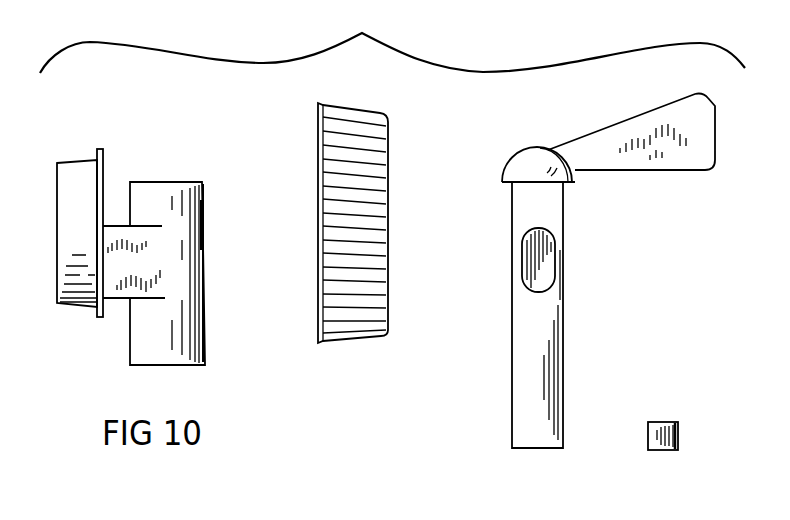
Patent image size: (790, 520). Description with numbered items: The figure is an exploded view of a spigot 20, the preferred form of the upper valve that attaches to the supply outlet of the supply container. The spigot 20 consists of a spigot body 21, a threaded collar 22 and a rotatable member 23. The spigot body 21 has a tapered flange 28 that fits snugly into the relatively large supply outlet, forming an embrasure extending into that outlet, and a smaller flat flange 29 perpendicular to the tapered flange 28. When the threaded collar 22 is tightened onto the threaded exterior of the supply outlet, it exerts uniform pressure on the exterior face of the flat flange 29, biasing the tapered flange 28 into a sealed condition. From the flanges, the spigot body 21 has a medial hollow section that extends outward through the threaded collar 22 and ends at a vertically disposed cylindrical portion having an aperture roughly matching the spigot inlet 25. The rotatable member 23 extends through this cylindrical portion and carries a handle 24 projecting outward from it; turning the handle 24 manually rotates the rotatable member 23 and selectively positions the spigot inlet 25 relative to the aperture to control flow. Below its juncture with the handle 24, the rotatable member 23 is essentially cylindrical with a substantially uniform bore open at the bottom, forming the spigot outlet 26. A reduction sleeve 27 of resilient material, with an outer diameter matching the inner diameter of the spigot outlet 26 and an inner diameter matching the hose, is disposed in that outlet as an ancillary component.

The spigot 20 is at (392, 36).
The spigot body 21 is at (118, 330).
The threaded collar 22 is at (375, 347).
The rotatable member 23 is at (577, 303).
The handle 24 is at (710, 163).
The spigot inlet 25 is at (543, 273).
The spigot outlet 26 is at (540, 450).
The reduction sleeve 27 is at (678, 433).
The tapered flange 28 is at (68, 210).
The flat flange 29 is at (98, 152).